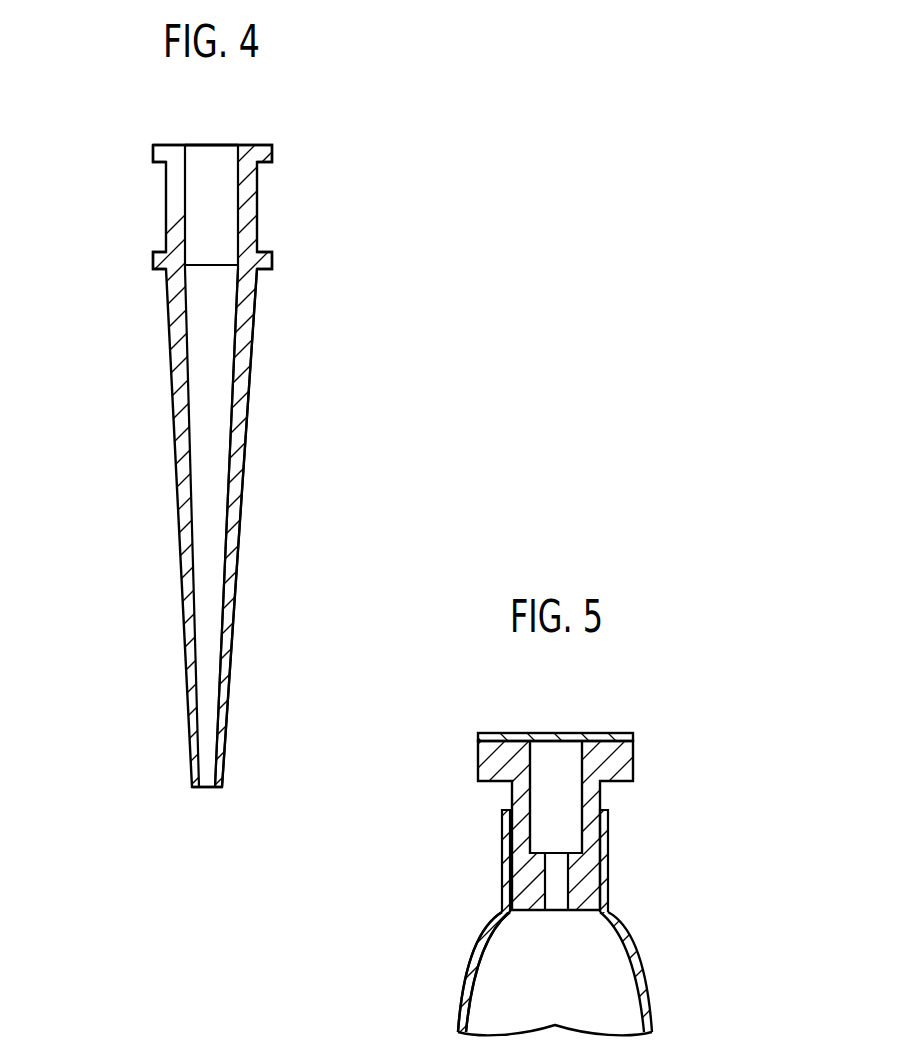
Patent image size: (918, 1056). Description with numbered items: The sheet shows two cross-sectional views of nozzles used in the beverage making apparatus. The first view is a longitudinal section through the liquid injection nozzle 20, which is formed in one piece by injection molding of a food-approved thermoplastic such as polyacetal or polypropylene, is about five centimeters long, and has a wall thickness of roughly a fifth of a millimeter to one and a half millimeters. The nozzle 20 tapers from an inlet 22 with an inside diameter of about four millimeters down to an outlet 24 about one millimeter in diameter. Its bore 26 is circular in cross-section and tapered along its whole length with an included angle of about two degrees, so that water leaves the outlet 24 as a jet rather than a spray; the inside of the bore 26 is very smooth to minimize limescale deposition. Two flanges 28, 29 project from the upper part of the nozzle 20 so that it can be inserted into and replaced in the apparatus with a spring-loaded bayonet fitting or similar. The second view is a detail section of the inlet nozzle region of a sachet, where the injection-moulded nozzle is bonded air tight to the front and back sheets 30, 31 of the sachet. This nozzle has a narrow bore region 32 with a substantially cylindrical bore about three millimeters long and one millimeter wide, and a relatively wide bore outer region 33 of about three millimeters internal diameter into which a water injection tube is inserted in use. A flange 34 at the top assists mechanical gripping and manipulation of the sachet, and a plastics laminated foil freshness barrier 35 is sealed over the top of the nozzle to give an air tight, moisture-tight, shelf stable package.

In FIG. 4, the nozzle 20 is at (290, 192).
In FIG. 4, the inlet 22 is at (208, 143).
In FIG. 4, the outlet 24 is at (211, 789).
In FIG. 4, the bore 26 is at (232, 392).
In FIG. 4, the flange 28 is at (152, 158).
In FIG. 4, the flange 29 is at (152, 264).
In FIG. 5, the front sheet 30 is at (647, 975).
In FIG. 5, the back sheet 31 is at (465, 967).
In FIG. 5, the narrow bore region 32 is at (590, 878).
In FIG. 5, the wide bore outer region 33 is at (593, 790).
In FIG. 5, the flange 34 is at (534, 757).
In FIG. 5, the freshness barrier 35 is at (597, 733).